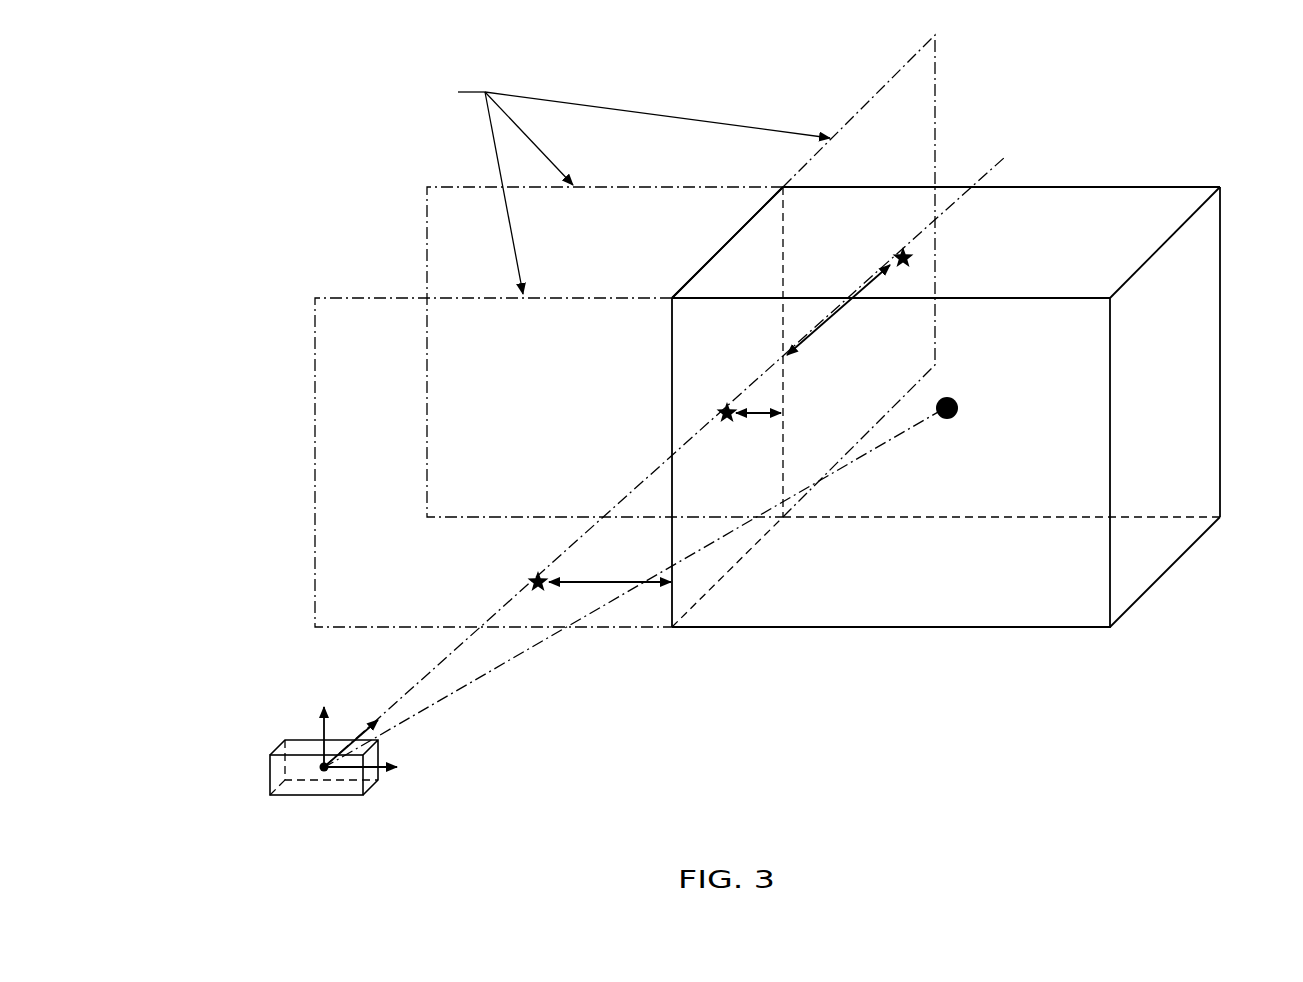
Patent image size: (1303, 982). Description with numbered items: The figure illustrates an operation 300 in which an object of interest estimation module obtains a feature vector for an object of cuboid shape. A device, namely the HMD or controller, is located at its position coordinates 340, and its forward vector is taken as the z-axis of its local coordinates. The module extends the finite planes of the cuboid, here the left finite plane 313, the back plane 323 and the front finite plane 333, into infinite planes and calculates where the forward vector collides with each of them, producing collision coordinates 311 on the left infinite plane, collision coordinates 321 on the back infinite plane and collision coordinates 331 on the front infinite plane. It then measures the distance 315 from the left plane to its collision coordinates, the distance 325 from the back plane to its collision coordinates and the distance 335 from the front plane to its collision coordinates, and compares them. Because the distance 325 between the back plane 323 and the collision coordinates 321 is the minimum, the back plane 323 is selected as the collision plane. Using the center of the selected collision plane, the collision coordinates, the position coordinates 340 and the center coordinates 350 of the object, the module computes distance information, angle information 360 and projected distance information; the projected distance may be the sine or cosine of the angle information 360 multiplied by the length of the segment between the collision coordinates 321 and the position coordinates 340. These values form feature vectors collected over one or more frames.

The collision detection scene 300 is at (218, 66).
The collision coordinates 311 is at (873, 273).
The finite plane 313 is at (707, 254).
The measured distance 315 is at (843, 328).
The collision coordinates 321 is at (697, 422).
The back plane 323 is at (1215, 507).
The measured distance 325 is at (755, 417).
The collision coordinates 331 is at (508, 593).
The finite plane 333 is at (1105, 614).
The measured distance 335 is at (608, 583).
The position coordinates 340 is at (300, 767).
The center coordinates 350 is at (955, 400).
The angle information 360 is at (442, 700).